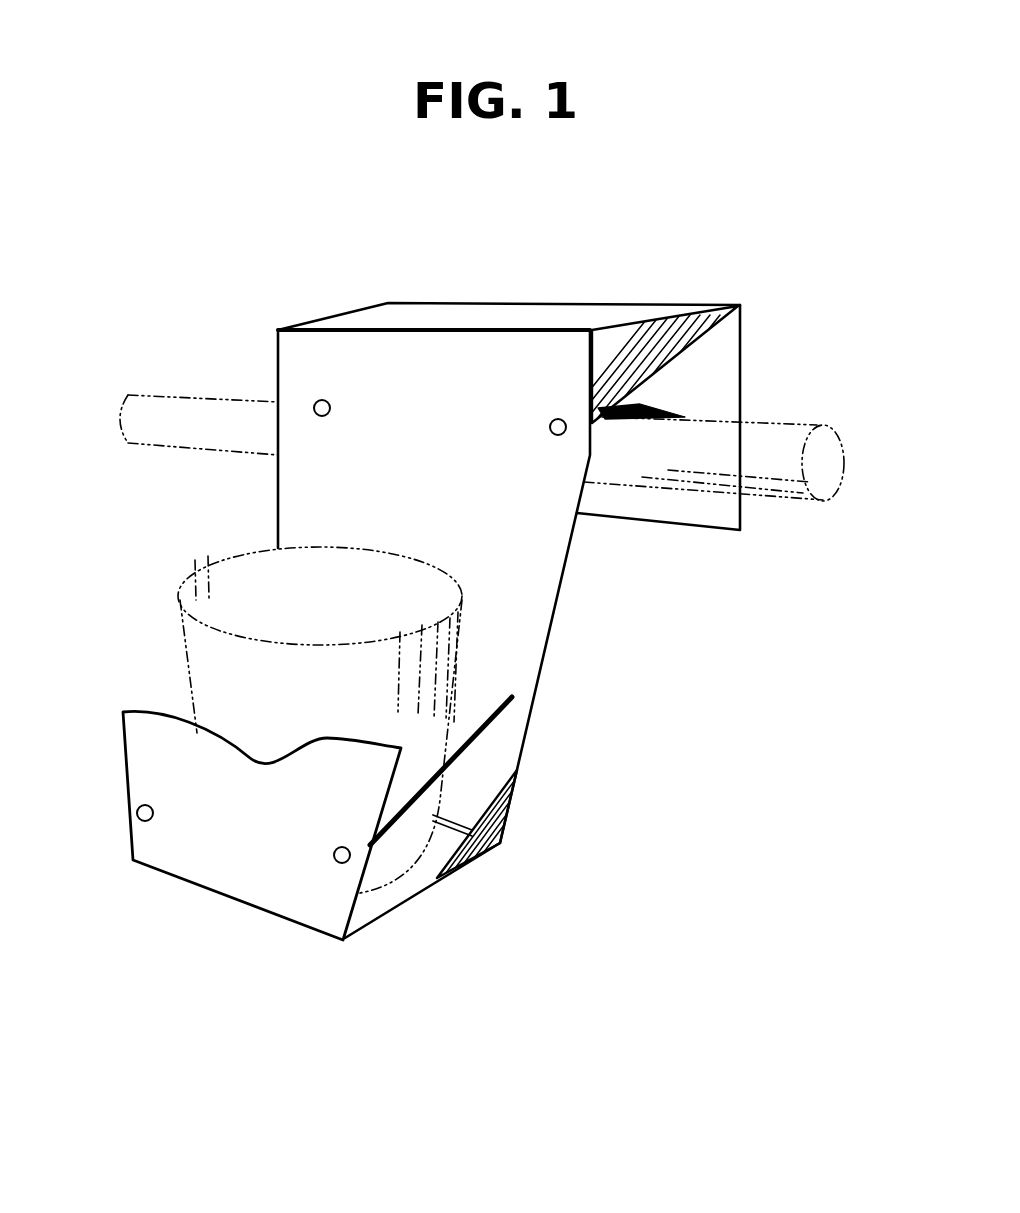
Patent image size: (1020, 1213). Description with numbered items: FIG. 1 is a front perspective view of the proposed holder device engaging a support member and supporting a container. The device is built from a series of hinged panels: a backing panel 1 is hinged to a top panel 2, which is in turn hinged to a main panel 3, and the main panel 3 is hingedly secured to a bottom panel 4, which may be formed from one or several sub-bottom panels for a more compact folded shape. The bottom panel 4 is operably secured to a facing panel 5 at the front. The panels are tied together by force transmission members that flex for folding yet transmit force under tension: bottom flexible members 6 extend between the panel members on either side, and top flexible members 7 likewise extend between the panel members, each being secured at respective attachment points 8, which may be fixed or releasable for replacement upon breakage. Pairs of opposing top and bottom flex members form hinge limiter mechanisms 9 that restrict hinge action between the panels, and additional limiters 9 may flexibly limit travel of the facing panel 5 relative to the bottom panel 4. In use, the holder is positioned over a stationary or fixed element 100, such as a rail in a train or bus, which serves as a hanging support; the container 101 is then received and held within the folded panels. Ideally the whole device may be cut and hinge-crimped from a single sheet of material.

The backing panel 1 is at (615, 507).
The top panel 2 is at (551, 313).
The main panel 3 is at (313, 468).
The bottom panel 4 is at (412, 908).
The facing panel 5 is at (240, 840).
The bottom flexible member 6 is at (468, 748).
The top flexible member 7 is at (625, 408).
The flexible member attachment point 8 is at (332, 400).
The hinge limiter mechanism 9 is at (705, 343).
The stationary or fixed element 100 is at (757, 467).
The container 101 is at (178, 597).